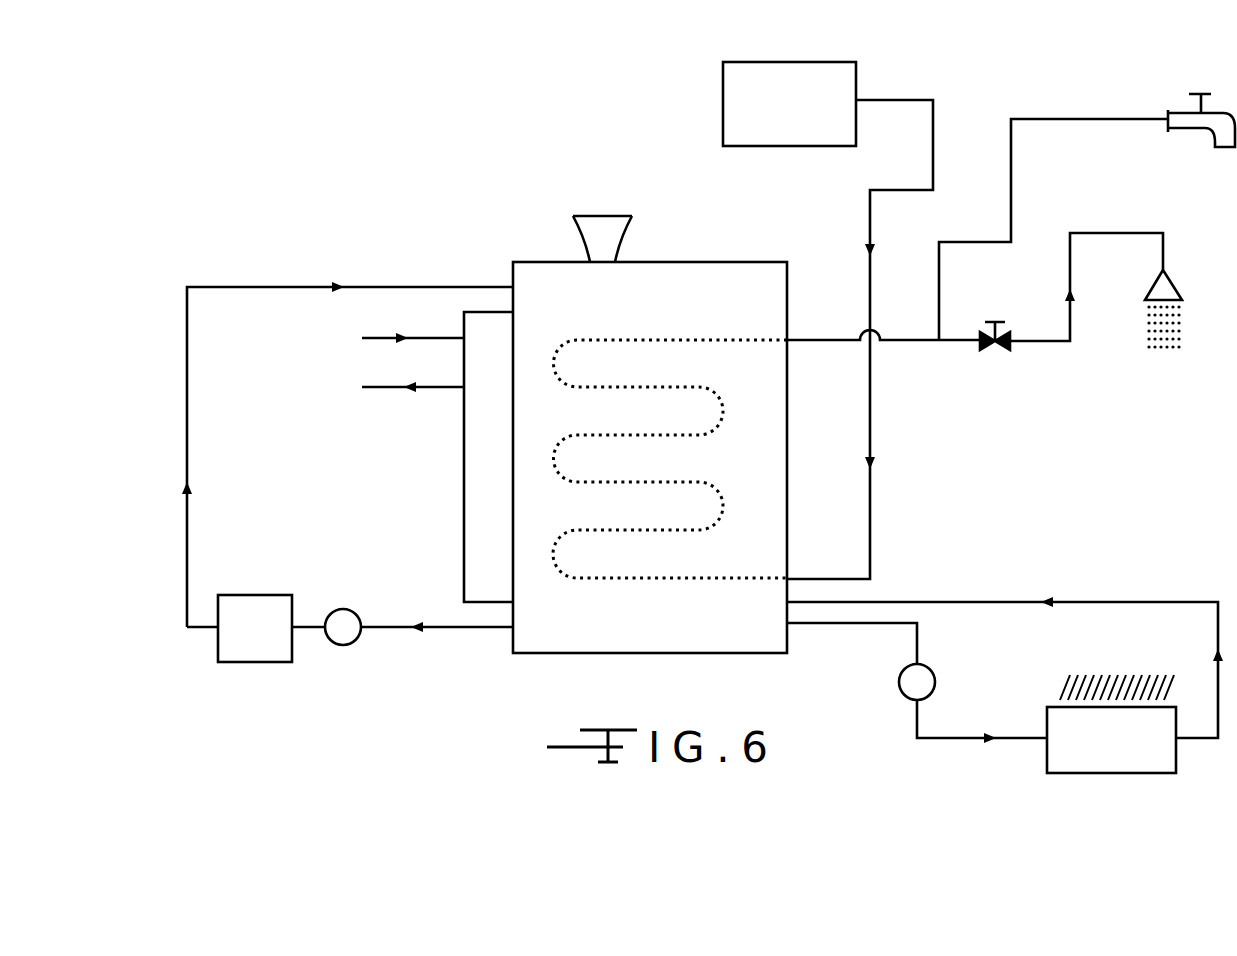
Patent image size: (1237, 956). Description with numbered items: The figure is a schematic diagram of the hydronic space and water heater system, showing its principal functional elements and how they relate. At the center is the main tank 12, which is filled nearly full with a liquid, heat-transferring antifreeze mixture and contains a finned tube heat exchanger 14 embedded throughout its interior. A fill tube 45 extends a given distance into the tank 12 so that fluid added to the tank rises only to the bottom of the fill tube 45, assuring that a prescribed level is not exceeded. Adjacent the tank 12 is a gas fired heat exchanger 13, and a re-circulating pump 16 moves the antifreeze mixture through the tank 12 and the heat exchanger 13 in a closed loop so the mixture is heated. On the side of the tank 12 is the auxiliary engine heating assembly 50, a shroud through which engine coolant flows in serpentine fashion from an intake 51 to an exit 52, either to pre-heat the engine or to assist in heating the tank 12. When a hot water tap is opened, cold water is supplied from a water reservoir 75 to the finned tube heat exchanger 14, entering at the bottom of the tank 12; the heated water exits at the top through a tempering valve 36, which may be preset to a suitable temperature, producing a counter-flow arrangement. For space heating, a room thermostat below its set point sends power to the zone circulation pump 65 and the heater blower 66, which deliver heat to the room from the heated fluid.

The main tank 12 is at (541, 262).
The gas fired heat exchanger 13 is at (243, 641).
The finned tube heat exchanger 14 is at (655, 340).
The re-circulating pump 16 is at (349, 609).
The tempering valve 36 is at (983, 352).
The fill tube 45 is at (590, 216).
The auxiliary engine heating assembly 50 is at (463, 480).
The intake 51 is at (382, 337).
The exit 52 is at (382, 390).
The zone circulation pump 65 is at (935, 681).
The heater blower 66 is at (1098, 748).
The water reservoir 75 is at (777, 113).